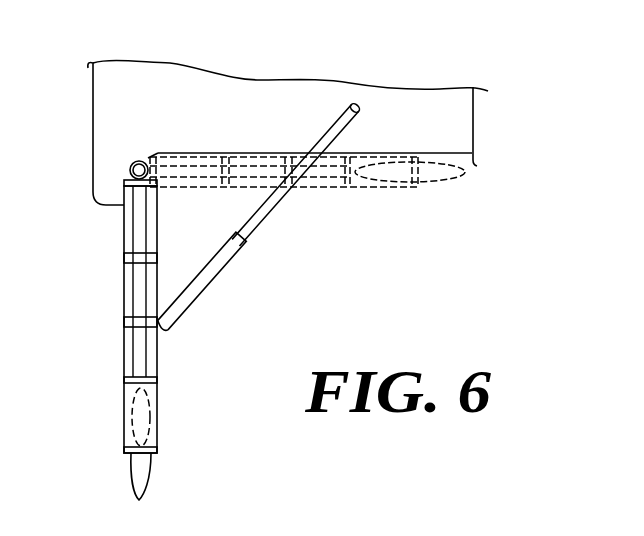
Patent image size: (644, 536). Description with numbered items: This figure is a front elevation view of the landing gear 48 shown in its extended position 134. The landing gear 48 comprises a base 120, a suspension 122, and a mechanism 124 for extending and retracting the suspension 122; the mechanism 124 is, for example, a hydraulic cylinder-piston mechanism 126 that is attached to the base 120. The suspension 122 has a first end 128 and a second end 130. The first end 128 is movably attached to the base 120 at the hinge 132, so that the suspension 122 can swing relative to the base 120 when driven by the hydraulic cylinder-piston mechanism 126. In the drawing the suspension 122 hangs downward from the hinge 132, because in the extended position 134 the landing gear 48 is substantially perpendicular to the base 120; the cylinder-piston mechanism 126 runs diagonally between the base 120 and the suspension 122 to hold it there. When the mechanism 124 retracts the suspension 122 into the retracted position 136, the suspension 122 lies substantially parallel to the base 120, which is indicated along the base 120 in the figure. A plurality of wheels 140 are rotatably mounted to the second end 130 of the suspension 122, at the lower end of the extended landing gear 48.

The landing gear 48 is at (266, 63).
The base 120 is at (183, 65).
The suspension 122 is at (118, 243).
The mechanism for extending and retracting the suspension 124 is at (265, 217).
The hydraulic cylinder-piston mechanism 126 is at (208, 278).
The first end 128 is at (124, 181).
The second end 130 is at (158, 388).
The hinge 132 is at (131, 165).
The extended position 134 is at (168, 348).
The retracted position 136 is at (206, 162).
The wheels 140 is at (150, 468).